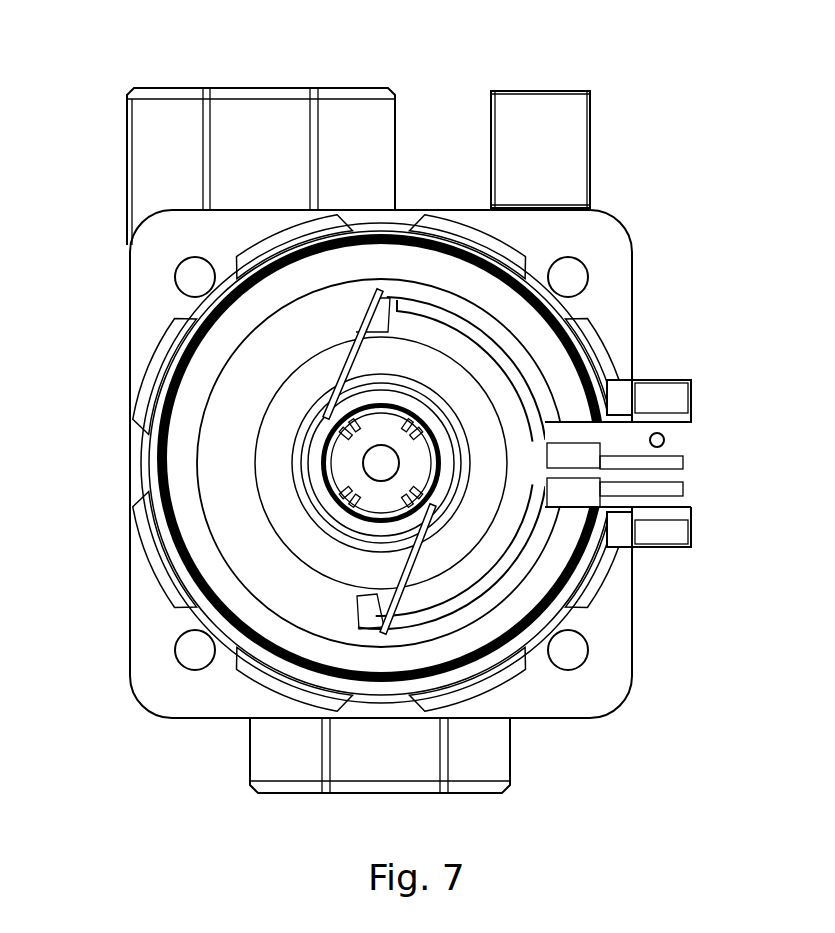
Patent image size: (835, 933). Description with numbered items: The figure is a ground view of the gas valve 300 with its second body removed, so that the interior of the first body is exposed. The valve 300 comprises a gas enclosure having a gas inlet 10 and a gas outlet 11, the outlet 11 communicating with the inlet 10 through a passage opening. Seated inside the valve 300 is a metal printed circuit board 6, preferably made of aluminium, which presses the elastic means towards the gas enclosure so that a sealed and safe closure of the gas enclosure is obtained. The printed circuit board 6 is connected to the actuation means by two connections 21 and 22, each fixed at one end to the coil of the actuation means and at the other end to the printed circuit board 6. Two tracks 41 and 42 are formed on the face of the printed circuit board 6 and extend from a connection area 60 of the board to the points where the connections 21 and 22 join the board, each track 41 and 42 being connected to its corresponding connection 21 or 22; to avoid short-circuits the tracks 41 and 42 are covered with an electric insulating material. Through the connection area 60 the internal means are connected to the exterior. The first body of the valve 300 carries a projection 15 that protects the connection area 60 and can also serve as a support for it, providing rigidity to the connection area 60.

The gas inlet 10 is at (270, 85).
The gas outlet 11 is at (355, 800).
The metal printed circuit board 6 is at (213, 488).
The projection 15 is at (650, 395).
The connection 21 is at (333, 387).
The connection 22 is at (390, 563).
The track 41 is at (497, 350).
The track 42 is at (467, 597).
The connection area 60 is at (657, 500).
The gas valve 300 is at (120, 278).